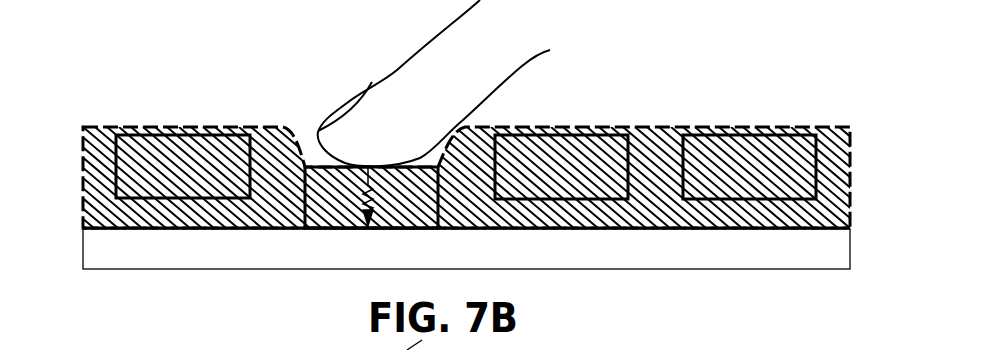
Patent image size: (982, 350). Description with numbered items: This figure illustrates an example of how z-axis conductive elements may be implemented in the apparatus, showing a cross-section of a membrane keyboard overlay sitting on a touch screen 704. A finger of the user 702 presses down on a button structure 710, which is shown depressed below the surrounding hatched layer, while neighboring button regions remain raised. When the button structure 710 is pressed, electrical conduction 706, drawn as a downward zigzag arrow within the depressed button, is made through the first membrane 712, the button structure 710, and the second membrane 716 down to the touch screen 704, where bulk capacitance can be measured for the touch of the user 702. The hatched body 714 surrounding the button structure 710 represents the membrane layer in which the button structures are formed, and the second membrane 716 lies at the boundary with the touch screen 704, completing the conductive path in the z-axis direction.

The user 702 is at (362, 86).
The touch screen 704 is at (466, 249).
The electrical conduction 706 is at (366, 213).
The button structure 710 is at (303, 198).
The first membrane 712 is at (140, 132).
The deformable layer 714 is at (142, 210).
The second membrane 716 is at (520, 229).